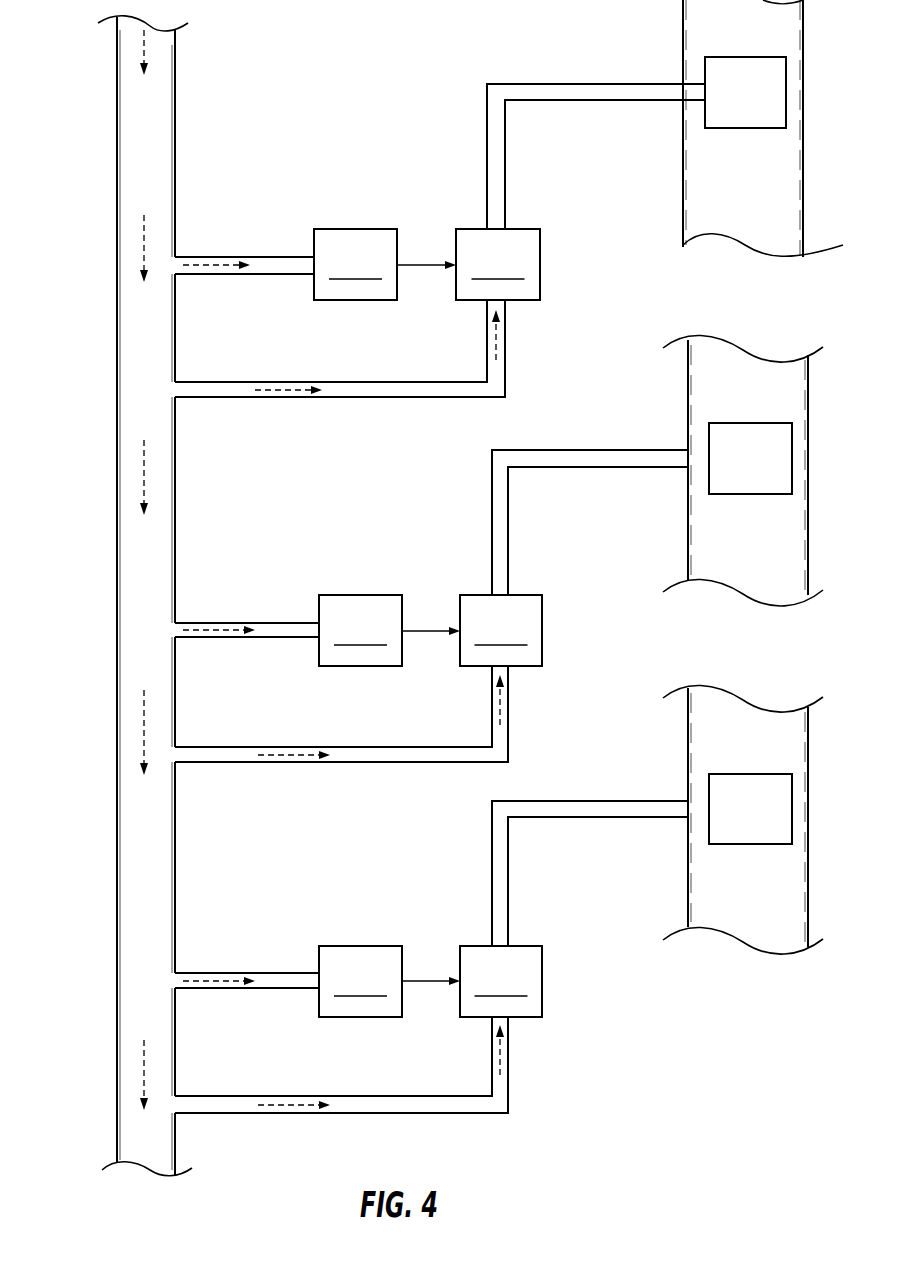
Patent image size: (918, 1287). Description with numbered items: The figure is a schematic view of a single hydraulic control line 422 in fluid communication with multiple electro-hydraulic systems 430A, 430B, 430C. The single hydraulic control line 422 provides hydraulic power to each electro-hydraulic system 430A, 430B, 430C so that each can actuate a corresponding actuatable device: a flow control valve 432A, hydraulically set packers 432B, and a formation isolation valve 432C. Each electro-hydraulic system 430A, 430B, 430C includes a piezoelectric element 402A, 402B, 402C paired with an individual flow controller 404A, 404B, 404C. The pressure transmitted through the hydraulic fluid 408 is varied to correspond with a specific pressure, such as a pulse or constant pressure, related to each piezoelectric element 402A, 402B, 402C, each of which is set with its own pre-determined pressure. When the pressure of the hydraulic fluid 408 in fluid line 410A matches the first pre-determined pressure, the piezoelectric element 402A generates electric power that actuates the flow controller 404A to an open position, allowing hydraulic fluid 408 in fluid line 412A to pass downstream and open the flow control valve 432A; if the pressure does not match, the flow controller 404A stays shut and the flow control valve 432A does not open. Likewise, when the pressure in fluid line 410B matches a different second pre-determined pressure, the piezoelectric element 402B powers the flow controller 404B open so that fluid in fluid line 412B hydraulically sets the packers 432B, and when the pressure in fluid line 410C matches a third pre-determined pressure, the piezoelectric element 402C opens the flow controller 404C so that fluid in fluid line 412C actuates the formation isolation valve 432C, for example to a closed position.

The single hydraulic control line 422 is at (175, 62).
The hydraulic fluid 408 is at (128, 167).
The fluid line 410A is at (205, 257).
The fluid line 410B is at (205, 623).
The fluid line 410C is at (205, 973).
The fluid line 412A is at (277, 398).
The fluid line 412B is at (282, 763).
The fluid line 412C is at (282, 1113).
The piezoelectric element 402A is at (355, 264).
The piezoelectric element 402B is at (360, 630).
The piezoelectric element 402C is at (360, 981).
The flow controller 404A is at (498, 264).
The flow controller 404B is at (501, 630).
The flow controller 404C is at (501, 981).
The electro-hydraulic system 430A is at (427, 222).
The electro-hydraulic system 430B is at (430, 587).
The electro-hydraulic system 430C is at (430, 938).
The flow control valve 432A is at (772, 107).
The hydraulically set packers 432B is at (777, 473).
The formation isolation valve 432C is at (777, 824).